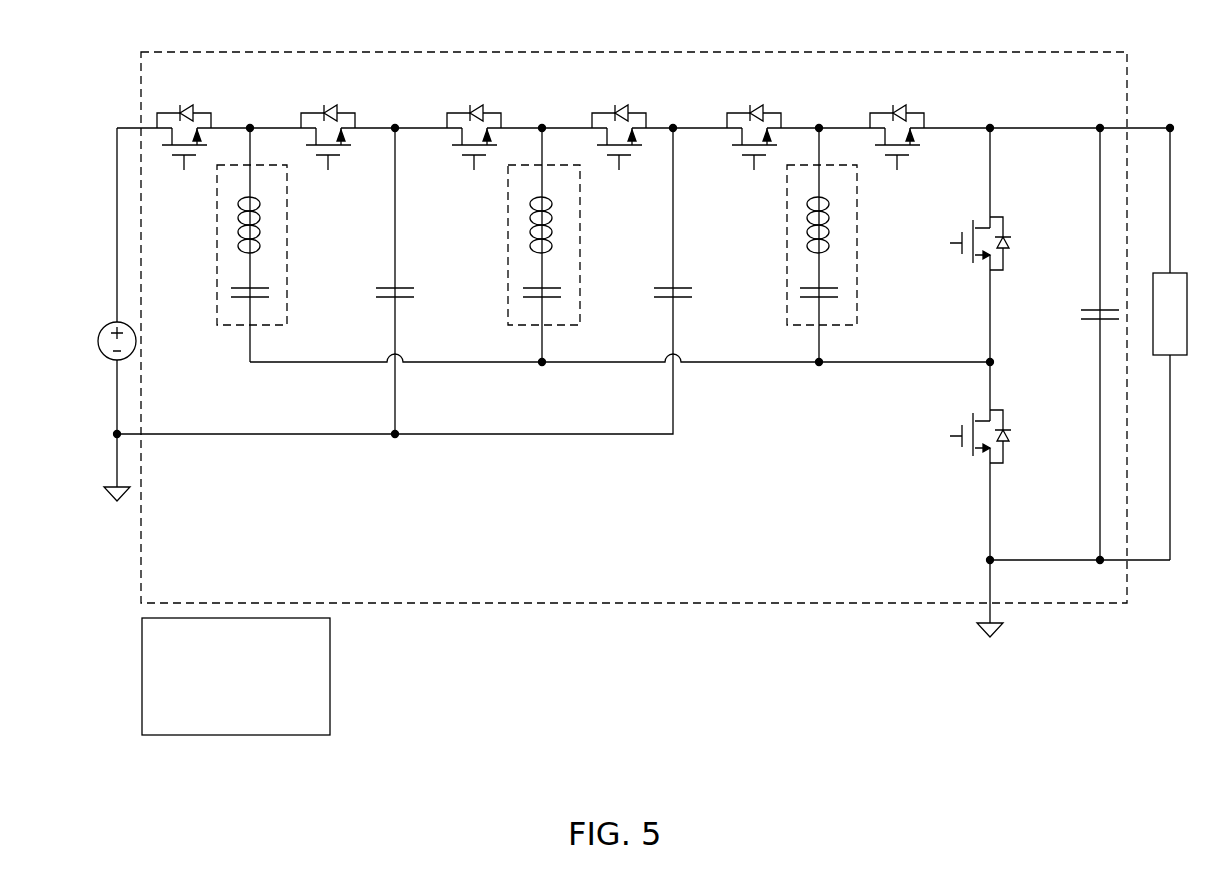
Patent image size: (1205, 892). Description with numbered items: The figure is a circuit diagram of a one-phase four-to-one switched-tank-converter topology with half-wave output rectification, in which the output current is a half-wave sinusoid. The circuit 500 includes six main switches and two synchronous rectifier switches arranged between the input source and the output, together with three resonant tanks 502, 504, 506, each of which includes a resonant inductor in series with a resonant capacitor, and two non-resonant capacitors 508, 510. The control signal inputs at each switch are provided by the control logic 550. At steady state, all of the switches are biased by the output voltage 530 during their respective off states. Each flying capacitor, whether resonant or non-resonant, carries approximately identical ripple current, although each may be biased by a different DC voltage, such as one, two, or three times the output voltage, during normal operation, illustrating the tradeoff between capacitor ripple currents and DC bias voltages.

The circuit 500 is at (188, 53).
The resonant tank 502 is at (289, 233).
The resonant tank 504 is at (581, 231).
The resonant tank 506 is at (858, 222).
The non-resonant capacitor 508 is at (346, 332).
The non-resonant capacitor 510 is at (628, 332).
The VOUT 530 is at (1170, 82).
The control logic 550 is at (236, 676).